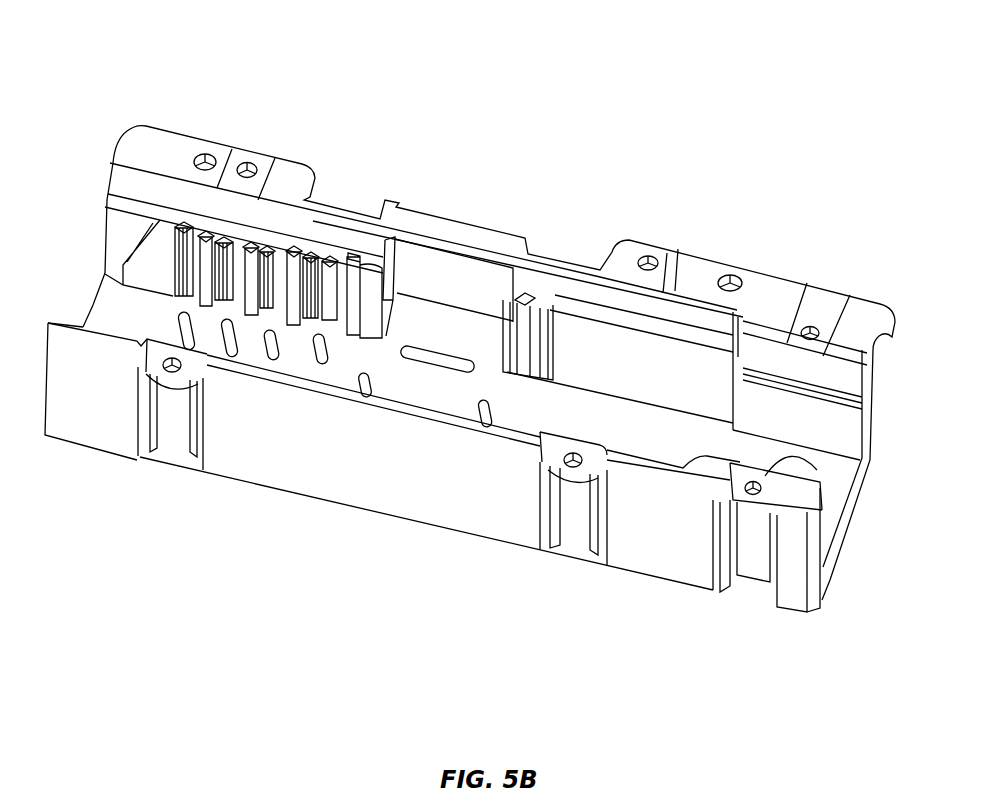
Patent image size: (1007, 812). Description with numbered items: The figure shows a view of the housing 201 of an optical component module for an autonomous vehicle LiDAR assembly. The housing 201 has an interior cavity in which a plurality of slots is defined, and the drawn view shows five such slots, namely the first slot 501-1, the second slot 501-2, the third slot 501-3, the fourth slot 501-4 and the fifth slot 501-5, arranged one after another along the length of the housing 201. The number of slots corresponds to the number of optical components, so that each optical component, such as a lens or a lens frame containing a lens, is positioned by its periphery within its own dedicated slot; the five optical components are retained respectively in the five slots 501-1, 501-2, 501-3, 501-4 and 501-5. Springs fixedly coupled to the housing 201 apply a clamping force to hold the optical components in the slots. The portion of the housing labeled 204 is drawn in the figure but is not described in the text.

The housing 201 is at (470, 309).
The connector housing 204 is at (330, 463).
The first slot 501-1 is at (433, 332).
The second slot 501-2 is at (334, 248).
The third slot 501-3 is at (283, 246).
The fourth slot 501-4 is at (240, 252).
The fifth slot 501-5 is at (182, 256).